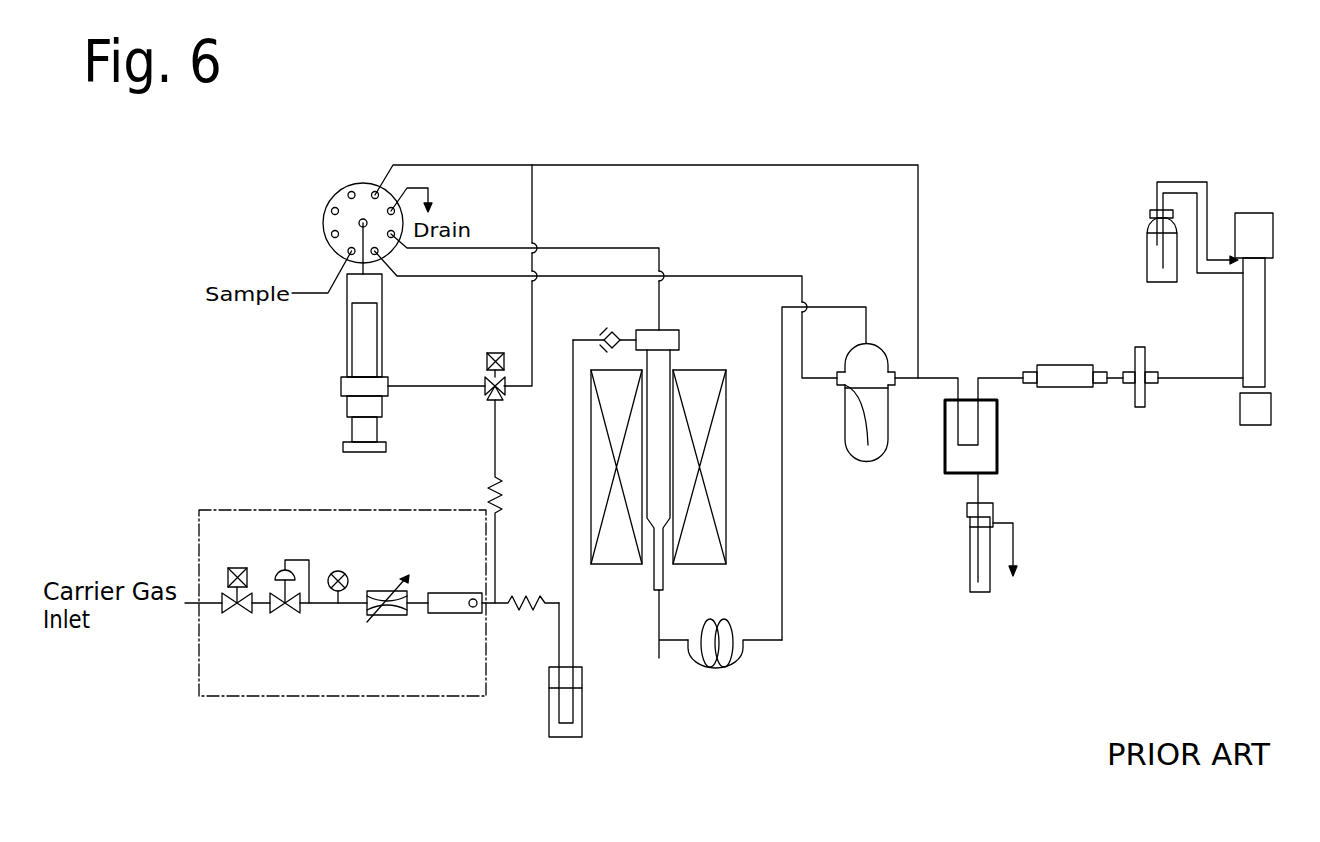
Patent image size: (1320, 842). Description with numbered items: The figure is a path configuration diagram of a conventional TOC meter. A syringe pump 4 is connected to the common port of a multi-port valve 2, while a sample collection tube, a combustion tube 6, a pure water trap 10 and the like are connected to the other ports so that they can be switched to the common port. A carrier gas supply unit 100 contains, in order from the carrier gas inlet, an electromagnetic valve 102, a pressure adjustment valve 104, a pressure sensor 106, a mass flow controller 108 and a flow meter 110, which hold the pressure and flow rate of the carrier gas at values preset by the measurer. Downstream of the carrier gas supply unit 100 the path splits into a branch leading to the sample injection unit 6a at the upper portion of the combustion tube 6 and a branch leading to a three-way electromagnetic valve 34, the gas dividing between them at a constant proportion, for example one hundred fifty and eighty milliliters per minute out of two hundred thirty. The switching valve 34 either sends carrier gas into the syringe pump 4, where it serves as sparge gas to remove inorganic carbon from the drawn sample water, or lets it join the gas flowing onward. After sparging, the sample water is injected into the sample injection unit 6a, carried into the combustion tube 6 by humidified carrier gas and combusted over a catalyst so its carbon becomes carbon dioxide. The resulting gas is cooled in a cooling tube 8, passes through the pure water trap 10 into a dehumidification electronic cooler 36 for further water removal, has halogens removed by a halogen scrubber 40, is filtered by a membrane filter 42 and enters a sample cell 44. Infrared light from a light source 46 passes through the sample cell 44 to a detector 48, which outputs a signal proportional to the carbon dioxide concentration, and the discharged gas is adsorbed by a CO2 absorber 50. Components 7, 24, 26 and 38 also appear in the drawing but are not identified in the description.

The multi-port valve 2 is at (363, 183).
The syringe pump 4 is at (345, 346).
The combustion tube 6 is at (659, 472).
The sample injection unit 6a is at (668, 330).
The column oven 7 is at (722, 368).
The cooling tube 8 is at (715, 670).
The pure water trap 10 is at (870, 362).
The trap 24 is at (563, 737).
The check valve 26 is at (605, 336).
The three-way electromagnetic valve 34 is at (485, 378).
The dehumidification electronic cooler 36 is at (997, 460).
The liquid drain trap 38 is at (970, 548).
The halogen scrubber 40 is at (1064, 390).
The membrane filter 42 is at (1142, 408).
The sample cell 44 is at (1243, 322).
The light source 46 is at (1255, 212).
The detector 48 is at (1254, 427).
The CO2 absorber 50 is at (1147, 250).
The carrier gas supply unit 100 is at (265, 510).
The electromagnetic valve 102 is at (240, 614).
The pressure adjustment valve 104 is at (287, 614).
The pressure sensor 106 is at (337, 570).
The mass flow controller 108 is at (383, 617).
The flow meter 110 is at (455, 615).